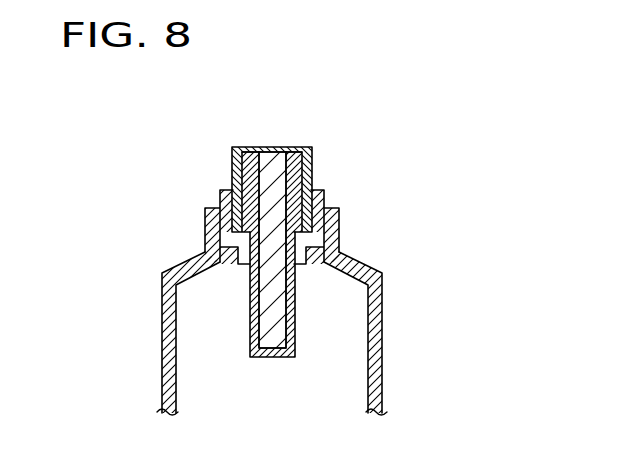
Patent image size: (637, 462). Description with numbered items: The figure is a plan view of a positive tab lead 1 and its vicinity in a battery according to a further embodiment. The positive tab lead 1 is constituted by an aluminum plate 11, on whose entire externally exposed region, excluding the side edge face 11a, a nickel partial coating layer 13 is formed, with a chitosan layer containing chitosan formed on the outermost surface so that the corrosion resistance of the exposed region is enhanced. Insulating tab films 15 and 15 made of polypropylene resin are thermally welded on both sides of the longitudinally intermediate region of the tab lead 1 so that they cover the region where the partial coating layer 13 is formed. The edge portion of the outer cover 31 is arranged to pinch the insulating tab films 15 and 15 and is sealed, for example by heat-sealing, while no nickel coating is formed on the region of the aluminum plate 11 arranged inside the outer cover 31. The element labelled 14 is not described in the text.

The positive tab lead 1 is at (237, 182).
The aluminum plate 11 is at (266, 152).
The side edge face 11a is at (269, 172).
The partial coating layer 13 is at (235, 160).
The center contact pin 14 is at (303, 179).
The insulating tab film 15 is at (225, 221).
The outer cover 31 is at (373, 367).